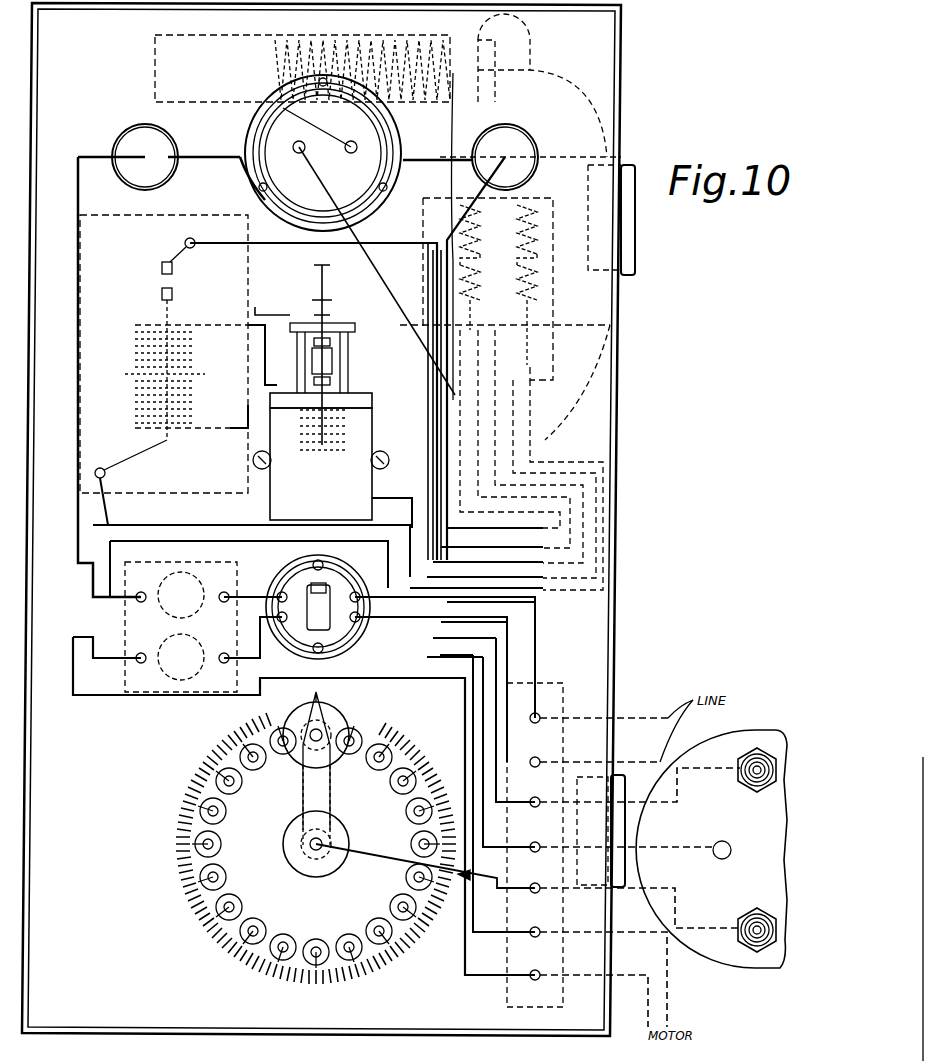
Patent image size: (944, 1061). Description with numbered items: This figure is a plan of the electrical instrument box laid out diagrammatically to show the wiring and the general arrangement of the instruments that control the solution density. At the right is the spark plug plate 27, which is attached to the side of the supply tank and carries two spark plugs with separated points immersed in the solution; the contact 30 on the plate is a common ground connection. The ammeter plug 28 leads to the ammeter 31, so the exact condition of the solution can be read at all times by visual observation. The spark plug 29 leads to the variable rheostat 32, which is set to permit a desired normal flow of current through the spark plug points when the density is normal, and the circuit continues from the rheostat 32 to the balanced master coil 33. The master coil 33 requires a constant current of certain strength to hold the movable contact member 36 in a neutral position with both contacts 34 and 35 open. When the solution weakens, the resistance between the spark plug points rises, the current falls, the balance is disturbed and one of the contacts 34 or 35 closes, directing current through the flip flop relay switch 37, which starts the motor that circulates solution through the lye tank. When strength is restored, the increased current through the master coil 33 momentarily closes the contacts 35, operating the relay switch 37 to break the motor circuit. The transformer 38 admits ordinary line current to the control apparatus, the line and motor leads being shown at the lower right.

The spark plug plate 27 is at (711, 849).
The ammeter plug 28 is at (744, 763).
The spark plug 29 is at (744, 923).
The contact 30 is at (498, 707).
The ammeter 31 is at (320, 153).
The variable rheostat 32 is at (355, 838).
The balanced master coil 33 is at (332, 396).
The contact 34 is at (332, 381).
The contact 35 is at (332, 342).
The movable contact member 36 is at (332, 362).
The flip flop relay switch 37 is at (164, 370).
The transformer 38 is at (505, 319).